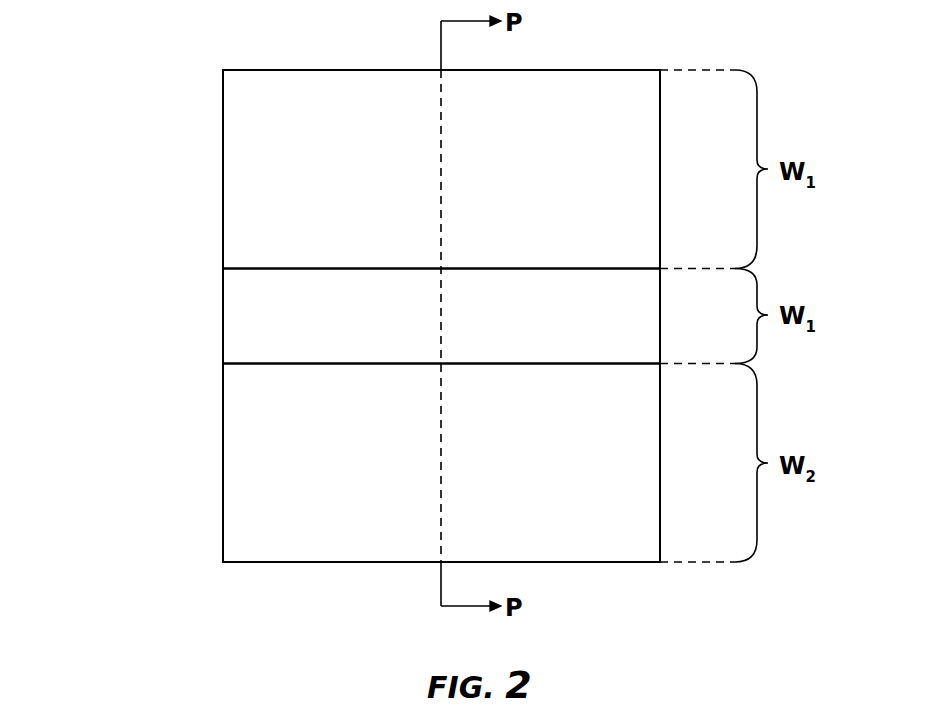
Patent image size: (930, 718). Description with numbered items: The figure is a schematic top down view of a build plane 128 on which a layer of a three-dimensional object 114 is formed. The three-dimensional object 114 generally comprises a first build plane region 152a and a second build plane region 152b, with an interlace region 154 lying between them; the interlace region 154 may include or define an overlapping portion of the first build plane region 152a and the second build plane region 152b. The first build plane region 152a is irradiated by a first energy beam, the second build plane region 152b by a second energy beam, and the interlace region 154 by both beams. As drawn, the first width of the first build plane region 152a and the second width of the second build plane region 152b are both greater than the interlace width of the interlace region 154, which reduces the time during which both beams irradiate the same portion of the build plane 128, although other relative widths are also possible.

The build plane 128 is at (141, 48).
The three-dimensional object 114 is at (210, 414).
The first build plane region 152a is at (306, 134).
The interlace region 154 is at (301, 335).
The second build plane region 152b is at (306, 454).